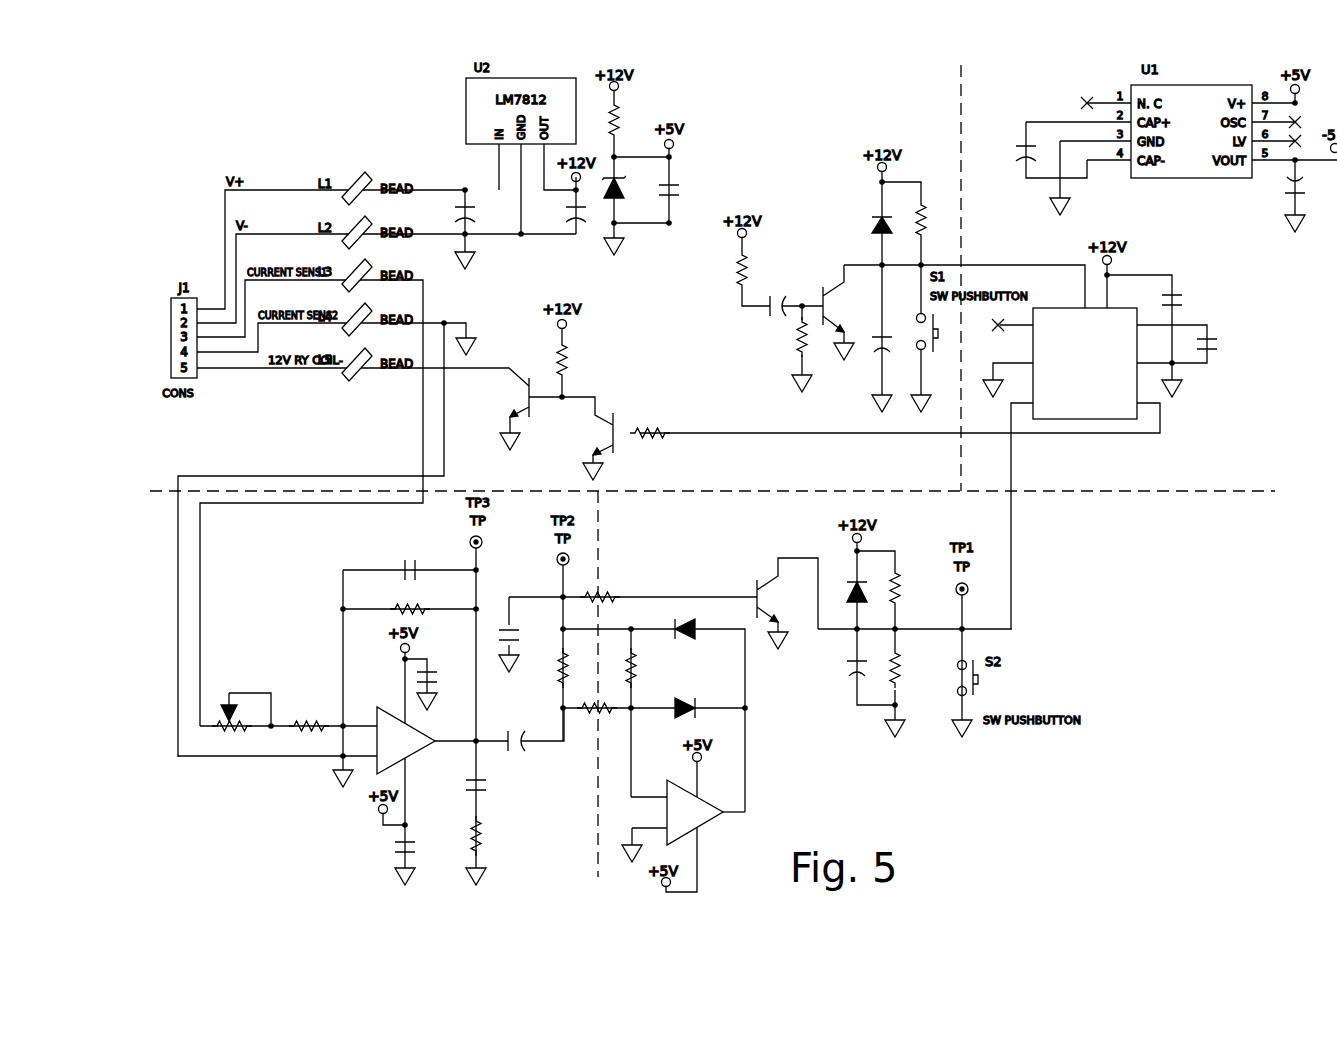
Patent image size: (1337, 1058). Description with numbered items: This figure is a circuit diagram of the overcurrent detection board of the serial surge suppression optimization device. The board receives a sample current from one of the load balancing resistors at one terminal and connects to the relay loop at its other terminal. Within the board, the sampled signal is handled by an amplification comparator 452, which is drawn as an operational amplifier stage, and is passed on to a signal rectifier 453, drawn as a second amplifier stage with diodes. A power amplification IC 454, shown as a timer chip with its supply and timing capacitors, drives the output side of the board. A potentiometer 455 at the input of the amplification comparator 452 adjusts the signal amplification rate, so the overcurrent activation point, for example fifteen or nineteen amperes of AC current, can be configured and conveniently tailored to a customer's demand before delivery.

The amplification comparator 452 is at (368, 778).
The signal rectifier 453 is at (762, 788).
The power amplification IC 454 is at (1180, 410).
The potentiometer 455 is at (228, 742).